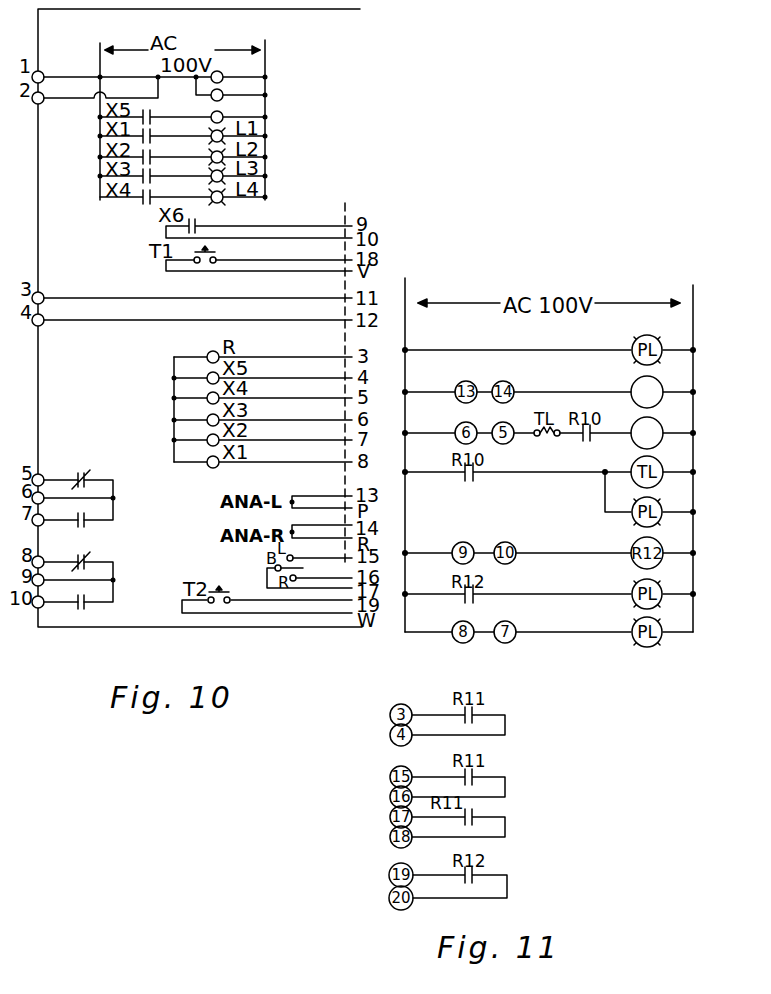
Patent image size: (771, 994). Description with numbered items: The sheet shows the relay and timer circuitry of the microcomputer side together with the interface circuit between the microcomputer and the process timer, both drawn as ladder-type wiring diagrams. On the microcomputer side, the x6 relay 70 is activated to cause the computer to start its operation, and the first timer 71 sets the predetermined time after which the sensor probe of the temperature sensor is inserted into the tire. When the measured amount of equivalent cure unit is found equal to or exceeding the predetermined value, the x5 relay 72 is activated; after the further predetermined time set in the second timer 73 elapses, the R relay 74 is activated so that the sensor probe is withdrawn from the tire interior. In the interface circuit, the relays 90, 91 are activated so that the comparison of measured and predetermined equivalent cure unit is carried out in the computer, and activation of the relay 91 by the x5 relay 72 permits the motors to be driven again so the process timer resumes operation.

In FIG. 10, the x6 relay 70 is at (260, 62).
In FIG. 10, the T1 timer 71 is at (262, 85).
In FIG. 10, the T2 timer 73 is at (265, 105).
In FIG. 10, the x5 relay 72 is at (88, 454).
In FIG. 10, the R relay 74 is at (90, 547).
In FIG. 11, the R10 relay 90 is at (660, 382).
In FIG. 11, the R11 relay 91 is at (662, 424).